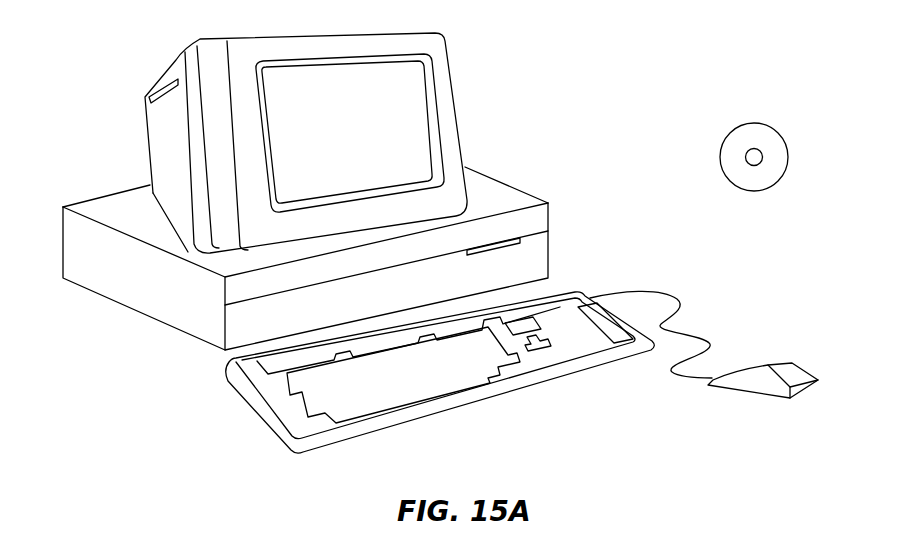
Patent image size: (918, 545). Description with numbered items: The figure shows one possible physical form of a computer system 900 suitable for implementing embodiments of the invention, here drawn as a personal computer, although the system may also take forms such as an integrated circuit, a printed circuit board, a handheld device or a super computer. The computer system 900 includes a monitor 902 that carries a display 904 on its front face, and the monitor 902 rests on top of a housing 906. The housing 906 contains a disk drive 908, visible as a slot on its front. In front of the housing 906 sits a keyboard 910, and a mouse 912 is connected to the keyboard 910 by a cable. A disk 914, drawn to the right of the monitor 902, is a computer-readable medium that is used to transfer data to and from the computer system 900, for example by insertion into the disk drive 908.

The computer system 900 is at (673, 26).
The monitor 902 is at (460, 143).
The display 904 is at (418, 95).
The housing 906 is at (187, 253).
The disk drive 908 is at (521, 236).
The keyboard 910 is at (446, 410).
The mouse 912 is at (810, 372).
The disk 914 is at (773, 128).